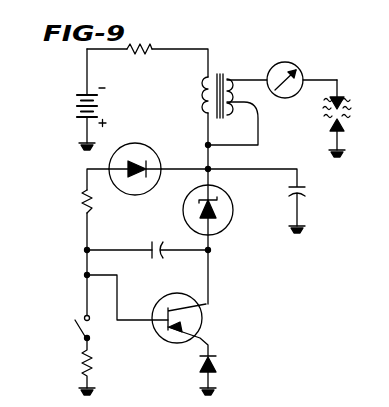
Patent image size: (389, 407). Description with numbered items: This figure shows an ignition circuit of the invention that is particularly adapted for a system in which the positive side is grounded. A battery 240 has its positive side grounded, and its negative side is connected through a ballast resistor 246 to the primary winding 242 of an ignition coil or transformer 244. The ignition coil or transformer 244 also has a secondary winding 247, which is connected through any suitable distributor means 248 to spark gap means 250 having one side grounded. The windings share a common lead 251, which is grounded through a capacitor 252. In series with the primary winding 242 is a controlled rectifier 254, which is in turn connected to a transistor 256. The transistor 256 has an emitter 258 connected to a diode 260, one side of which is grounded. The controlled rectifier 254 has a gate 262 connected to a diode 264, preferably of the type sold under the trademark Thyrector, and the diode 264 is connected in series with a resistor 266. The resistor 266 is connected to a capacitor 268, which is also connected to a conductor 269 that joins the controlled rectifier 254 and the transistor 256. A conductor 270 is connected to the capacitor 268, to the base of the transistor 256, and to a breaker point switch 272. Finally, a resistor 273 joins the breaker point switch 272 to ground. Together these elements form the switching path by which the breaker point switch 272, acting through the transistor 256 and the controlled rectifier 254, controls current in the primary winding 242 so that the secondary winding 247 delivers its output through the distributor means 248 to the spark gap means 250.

The battery 240 is at (80, 103).
The primary winding 242 is at (204, 113).
The ignition coil or transformer 244 is at (223, 76).
The ballast resistor 246 is at (135, 45).
The secondary winding 247 is at (258, 110).
The distributor means 248 is at (285, 63).
The spark gap means 250 is at (348, 97).
The common lead 251 is at (213, 157).
The capacitor 252 is at (317, 193).
The controlled rectifier 254 is at (236, 196).
The transistor 256 is at (157, 338).
The emitter 258 is at (199, 334).
The diode 260 is at (218, 366).
The gate 262 is at (204, 186).
The diode 264 is at (163, 124).
The resistor 266 is at (83, 200).
The capacitor 268 is at (156, 243).
The conductor 269 is at (214, 265).
The conductor 270 is at (84, 260).
The breaker point switch 272 is at (74, 337).
The resistor 273 is at (82, 364).